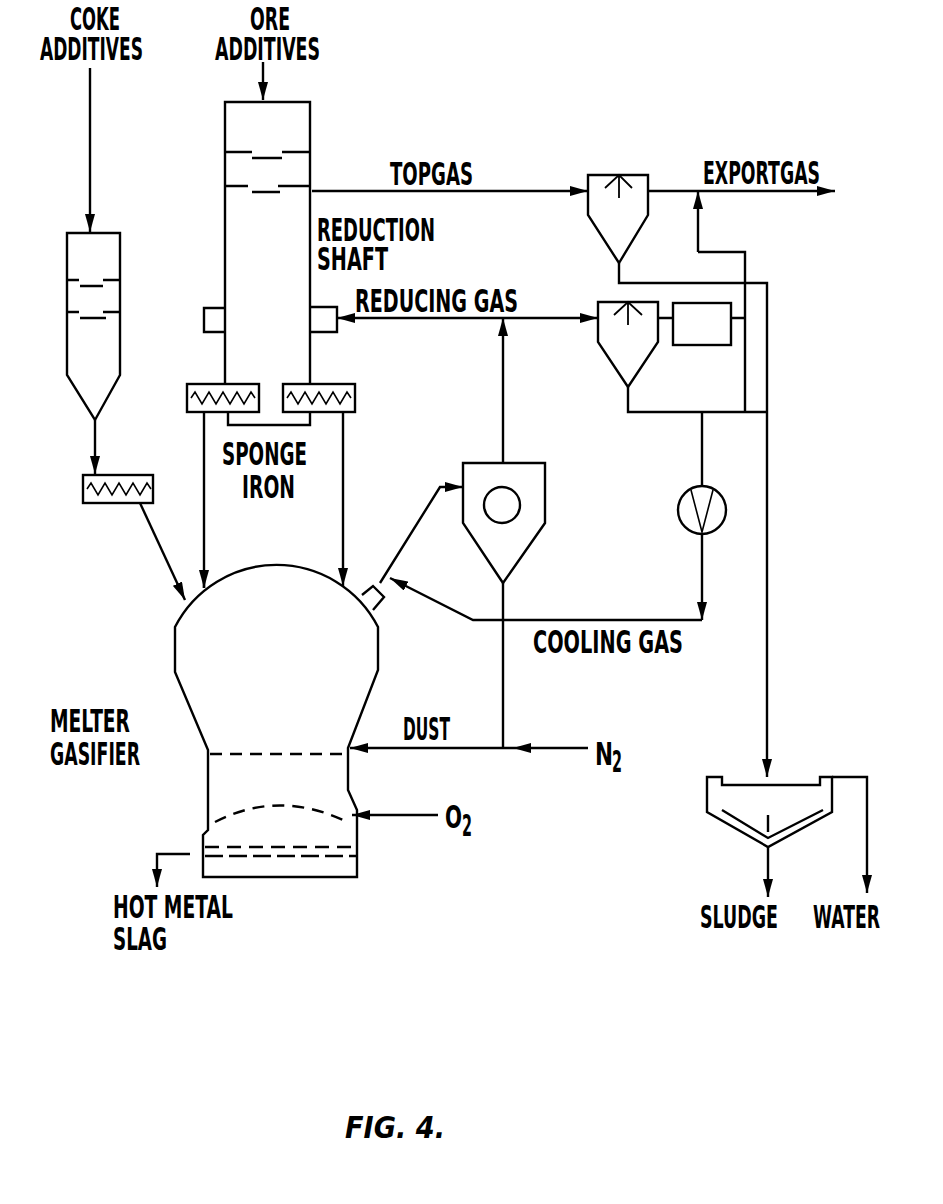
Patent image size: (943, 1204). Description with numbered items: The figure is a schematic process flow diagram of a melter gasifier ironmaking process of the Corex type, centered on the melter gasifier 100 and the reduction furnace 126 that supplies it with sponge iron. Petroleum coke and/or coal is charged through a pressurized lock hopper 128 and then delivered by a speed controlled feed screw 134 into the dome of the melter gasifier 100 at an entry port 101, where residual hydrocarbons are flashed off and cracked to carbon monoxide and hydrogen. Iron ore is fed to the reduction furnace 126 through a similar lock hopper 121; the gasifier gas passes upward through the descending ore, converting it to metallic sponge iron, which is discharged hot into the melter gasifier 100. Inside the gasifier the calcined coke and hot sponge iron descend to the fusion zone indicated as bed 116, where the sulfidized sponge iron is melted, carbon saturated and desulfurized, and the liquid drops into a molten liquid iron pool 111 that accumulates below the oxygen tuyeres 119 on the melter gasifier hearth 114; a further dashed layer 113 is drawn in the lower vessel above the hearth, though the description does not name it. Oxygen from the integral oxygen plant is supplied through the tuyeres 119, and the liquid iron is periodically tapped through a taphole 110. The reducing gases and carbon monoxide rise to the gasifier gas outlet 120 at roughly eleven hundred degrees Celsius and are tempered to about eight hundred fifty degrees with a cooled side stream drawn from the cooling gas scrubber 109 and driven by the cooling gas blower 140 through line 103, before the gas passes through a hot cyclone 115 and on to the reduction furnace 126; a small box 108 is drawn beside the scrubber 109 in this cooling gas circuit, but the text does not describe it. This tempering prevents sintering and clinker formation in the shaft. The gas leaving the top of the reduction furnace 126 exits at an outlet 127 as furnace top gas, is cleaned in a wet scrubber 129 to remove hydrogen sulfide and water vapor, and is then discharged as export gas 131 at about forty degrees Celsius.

The melter gasifier 100 is at (280, 687).
The entry port 101 is at (182, 607).
The cooling gas line 103 is at (590, 620).
The gas cooler 108 is at (713, 347).
The cooling gas scrubber 109 is at (605, 360).
The taphole 110 is at (198, 848).
The molten liquid iron pool 111 is at (345, 862).
The fixed bed 113 is at (225, 847).
The melter gasifier hearth 114 is at (360, 848).
The hot cyclone 115 is at (545, 487).
The bed 116 is at (282, 689).
The oxygen tuyeres 119 is at (355, 810).
The gasifier gas outlet 120 is at (371, 588).
The lock hopper 121 is at (225, 167).
The reduction furnace 126 is at (251, 263).
The outlet 127 is at (312, 190).
The pressurized lock hopper 128 is at (67, 258).
The wet scrubber 129 is at (617, 178).
The export gas 131 is at (779, 193).
The speed controlled feed screw 134 is at (83, 488).
The cooling gas blower 140 is at (679, 505).